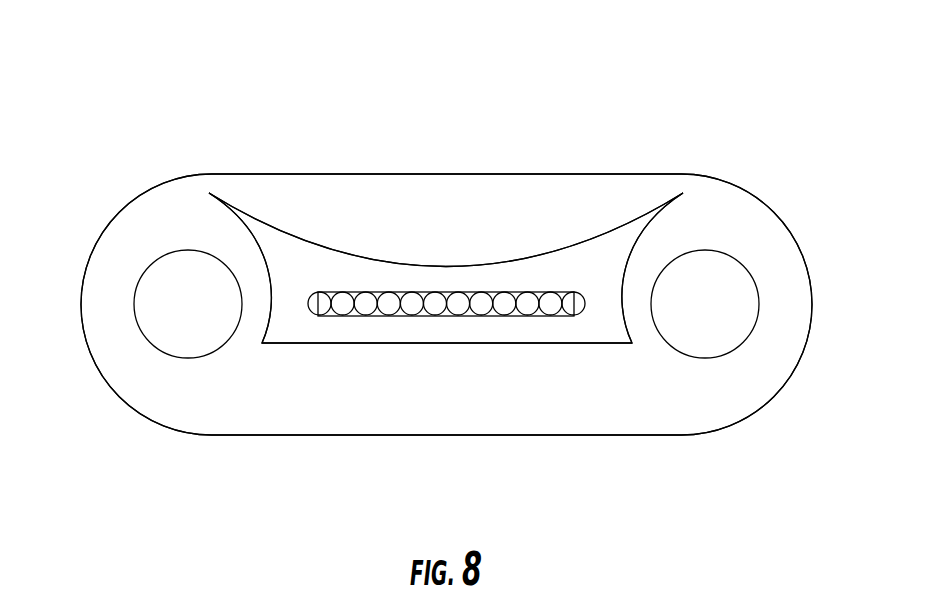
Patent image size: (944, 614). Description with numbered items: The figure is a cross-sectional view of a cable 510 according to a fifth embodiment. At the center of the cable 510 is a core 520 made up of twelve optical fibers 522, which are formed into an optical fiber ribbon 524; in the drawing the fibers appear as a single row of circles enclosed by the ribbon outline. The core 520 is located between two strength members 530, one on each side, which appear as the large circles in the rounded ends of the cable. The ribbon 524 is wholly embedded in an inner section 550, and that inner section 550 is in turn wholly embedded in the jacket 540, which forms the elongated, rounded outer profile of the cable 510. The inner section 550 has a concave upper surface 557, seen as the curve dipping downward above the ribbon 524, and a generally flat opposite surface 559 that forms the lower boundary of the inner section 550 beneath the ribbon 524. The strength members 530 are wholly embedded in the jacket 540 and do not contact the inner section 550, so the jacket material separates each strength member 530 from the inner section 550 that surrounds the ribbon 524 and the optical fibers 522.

The cable 510 is at (146, 110).
The core 520 is at (509, 275).
The optical fibers 522 is at (410, 310).
The optical fiber ribbon 524 is at (542, 313).
The strength members 530 is at (184, 262).
The jacket 540 is at (728, 410).
The inner section 550 is at (627, 247).
The concave upper surface 557 is at (314, 242).
The flat opposite surface 559 is at (380, 343).